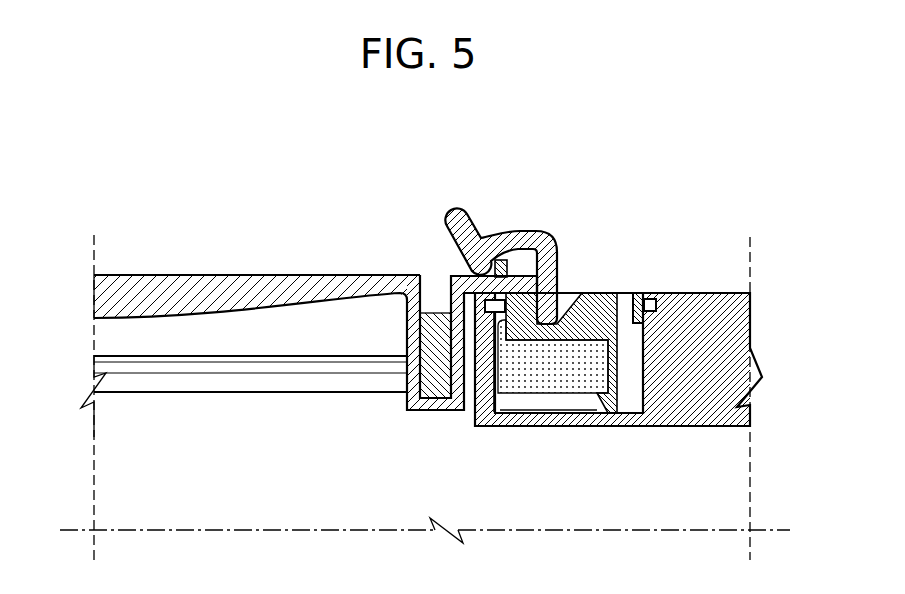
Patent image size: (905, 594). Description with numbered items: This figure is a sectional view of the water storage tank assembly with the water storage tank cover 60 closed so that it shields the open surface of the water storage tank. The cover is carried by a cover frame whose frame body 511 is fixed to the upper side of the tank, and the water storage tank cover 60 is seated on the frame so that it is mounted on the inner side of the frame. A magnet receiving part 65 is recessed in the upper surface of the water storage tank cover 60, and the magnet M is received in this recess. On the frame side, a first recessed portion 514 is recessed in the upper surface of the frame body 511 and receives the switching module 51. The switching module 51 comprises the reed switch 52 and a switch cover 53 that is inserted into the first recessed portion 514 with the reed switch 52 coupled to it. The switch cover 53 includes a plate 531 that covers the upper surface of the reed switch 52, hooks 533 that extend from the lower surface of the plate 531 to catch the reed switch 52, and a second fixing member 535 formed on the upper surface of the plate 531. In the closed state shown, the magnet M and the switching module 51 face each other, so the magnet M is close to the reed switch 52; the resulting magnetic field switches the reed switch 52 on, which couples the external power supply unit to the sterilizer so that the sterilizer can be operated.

The water storage tank cover 60 is at (276, 256).
The magnet receiving part 65 is at (407, 343).
The magnet M is at (437, 330).
The switching module 51 is at (618, 271).
The frame body 511 is at (715, 305).
The first recessed portion 514 is at (636, 376).
The reed switch 52 is at (474, 262).
The switch cover 53 is at (558, 280).
The plate 531 is at (568, 293).
The hooks 533 is at (615, 367).
The second fixing member 535 is at (494, 300).